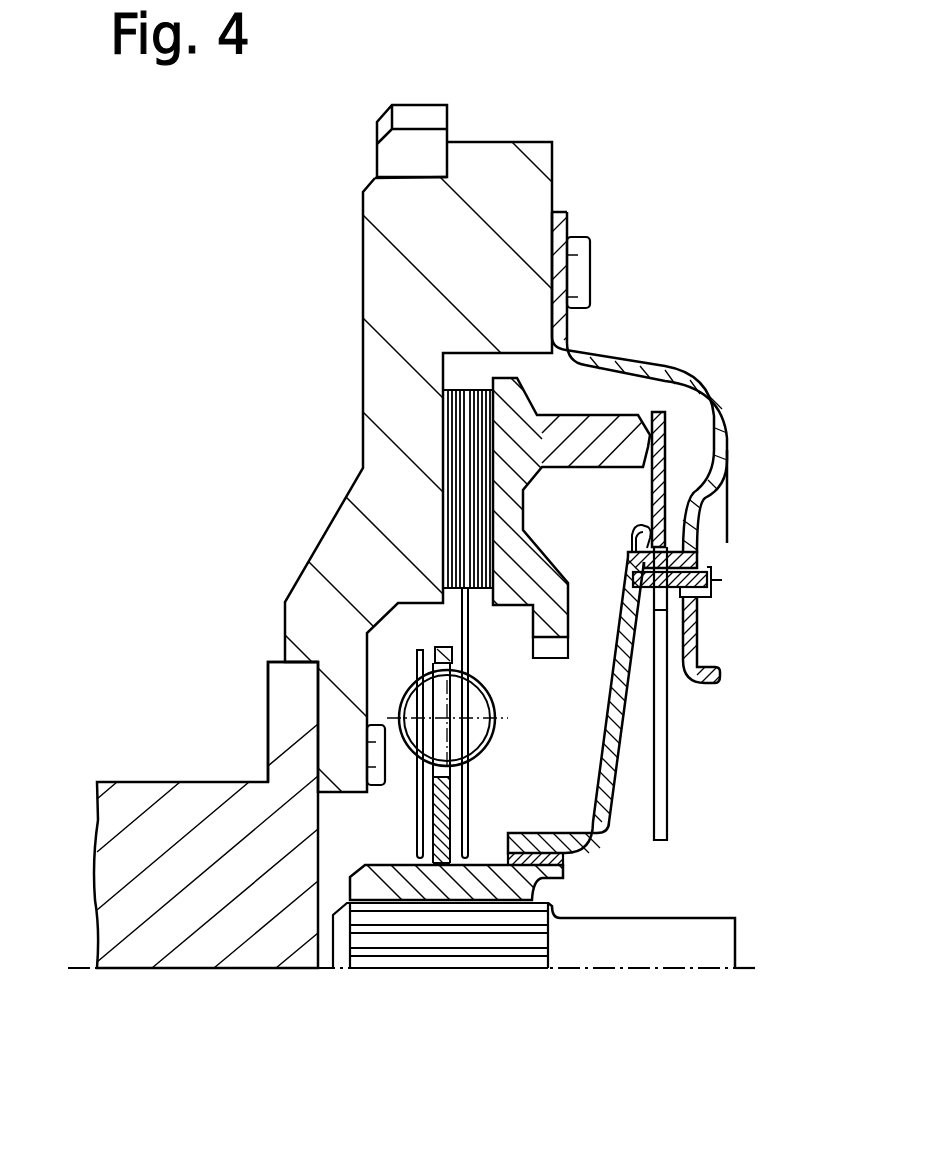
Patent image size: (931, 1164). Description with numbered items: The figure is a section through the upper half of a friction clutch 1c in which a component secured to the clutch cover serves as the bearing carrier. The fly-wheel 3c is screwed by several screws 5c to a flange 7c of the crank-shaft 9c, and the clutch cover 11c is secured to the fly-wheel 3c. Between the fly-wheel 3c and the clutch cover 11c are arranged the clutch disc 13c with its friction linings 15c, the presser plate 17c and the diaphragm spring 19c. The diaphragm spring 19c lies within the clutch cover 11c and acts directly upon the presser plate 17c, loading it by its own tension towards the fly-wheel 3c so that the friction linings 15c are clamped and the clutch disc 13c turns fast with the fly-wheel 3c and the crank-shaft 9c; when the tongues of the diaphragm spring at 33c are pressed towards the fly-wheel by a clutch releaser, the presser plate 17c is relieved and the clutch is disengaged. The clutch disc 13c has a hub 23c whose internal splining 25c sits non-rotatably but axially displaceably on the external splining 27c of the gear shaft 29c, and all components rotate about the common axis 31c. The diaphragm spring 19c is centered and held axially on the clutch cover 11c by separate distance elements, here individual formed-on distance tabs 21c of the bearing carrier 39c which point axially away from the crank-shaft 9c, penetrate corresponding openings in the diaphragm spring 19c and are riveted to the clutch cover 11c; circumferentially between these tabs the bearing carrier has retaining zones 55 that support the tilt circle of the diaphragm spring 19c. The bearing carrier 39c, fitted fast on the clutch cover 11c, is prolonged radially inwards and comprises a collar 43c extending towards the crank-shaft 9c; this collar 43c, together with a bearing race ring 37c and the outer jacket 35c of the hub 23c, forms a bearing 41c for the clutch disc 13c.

The friction clutch 1c is at (652, 223).
The fly-wheel 3c is at (405, 290).
The screws 5c is at (323, 762).
The flange 7c is at (285, 718).
The crank-shaft 9c is at (150, 850).
The clutch cover 11c is at (700, 400).
The clutch disc 13c is at (402, 656).
The friction linings 15c is at (463, 498).
The presser plate 17c is at (590, 440).
The diaphragm spring 19c is at (665, 470).
The distance tabs 21c is at (712, 580).
The hub 23c is at (470, 885).
The internal splining 25c is at (357, 877).
The external splining 27c is at (400, 940).
The gear shaft 29c is at (623, 952).
The axis of rotation 31c is at (748, 968).
The tongues of the diaphragm spring 33c is at (688, 690).
The outer jacket of the hub 35c is at (495, 867).
The bearing race ring 37c is at (563, 860).
The bearing carrier 39c is at (612, 765).
The bearing 41c is at (575, 887).
The collar 43c is at (662, 800).
The retaining zones 55 is at (630, 540).